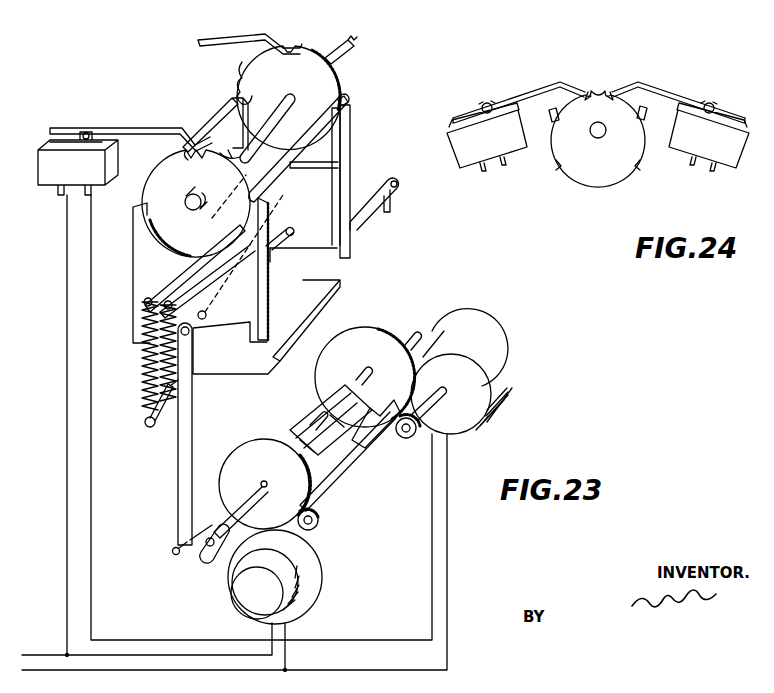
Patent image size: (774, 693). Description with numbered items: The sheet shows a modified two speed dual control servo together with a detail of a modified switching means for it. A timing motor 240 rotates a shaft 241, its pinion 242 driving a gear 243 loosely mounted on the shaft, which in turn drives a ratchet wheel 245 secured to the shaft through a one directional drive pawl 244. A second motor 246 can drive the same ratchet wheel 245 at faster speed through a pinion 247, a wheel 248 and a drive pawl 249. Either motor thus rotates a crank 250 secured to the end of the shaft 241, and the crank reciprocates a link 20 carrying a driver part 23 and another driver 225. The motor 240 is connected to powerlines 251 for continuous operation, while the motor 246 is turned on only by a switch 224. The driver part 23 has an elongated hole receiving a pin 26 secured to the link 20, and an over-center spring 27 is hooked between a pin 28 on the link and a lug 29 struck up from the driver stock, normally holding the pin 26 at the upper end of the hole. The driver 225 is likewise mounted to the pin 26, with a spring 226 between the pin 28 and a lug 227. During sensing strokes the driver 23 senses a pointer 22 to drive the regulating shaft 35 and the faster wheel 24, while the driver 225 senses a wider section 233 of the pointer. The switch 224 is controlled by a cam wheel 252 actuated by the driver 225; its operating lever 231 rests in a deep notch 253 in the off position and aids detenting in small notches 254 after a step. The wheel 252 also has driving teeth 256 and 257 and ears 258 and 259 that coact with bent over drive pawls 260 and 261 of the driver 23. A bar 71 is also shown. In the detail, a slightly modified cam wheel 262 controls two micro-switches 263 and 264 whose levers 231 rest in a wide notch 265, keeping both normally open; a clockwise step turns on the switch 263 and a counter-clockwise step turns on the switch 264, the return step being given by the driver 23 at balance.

In FIG. 23, the link 20 is at (177, 476).
In FIG. 23, the pointer 22 is at (358, 226).
In FIG. 23, the driver part 23 is at (350, 162).
In FIG. 23, the wheel 24 is at (336, 80).
In FIG. 23, the pin 26 is at (286, 228).
In FIG. 23, the over-center spring 27 is at (144, 412).
In FIG. 23, the pin 28 is at (162, 421).
In FIG. 23, the lug 29 is at (172, 280).
In FIG. 23, the regulating shaft 35 is at (347, 59).
In FIG. 23, the bar 71 is at (244, 36).
In FIG. 23, the switch 224 is at (48, 192).
In FIG. 23, the driver 225 is at (133, 288).
In FIG. 23, the spring 226 is at (164, 372).
In FIG. 23, the lug 227 is at (187, 302).
In FIG. 23, the actuator 231 is at (142, 128).
In FIG. 24, the actuator 231 is at (688, 90).
In FIG. 23, the wider section 233 is at (278, 368).
In FIG. 23, the timing motor 240 is at (320, 583).
In FIG. 23, the shaft 241 is at (213, 560).
In FIG. 23, the pinion 242 is at (318, 524).
In FIG. 23, the gear 243 is at (266, 442).
In FIG. 23, the one directional drive pawl 244 is at (328, 474).
In FIG. 23, the ratchet wheel 245 is at (304, 406).
In FIG. 23, the motor 246 is at (484, 402).
In FIG. 23, the pinion 247 is at (406, 439).
In FIG. 23, the wheel 248 is at (380, 330).
In FIG. 23, the drive pawl 249 is at (388, 406).
In FIG. 23, the crank 250 is at (174, 557).
In FIG. 23, the powerlines 251 is at (42, 666).
In FIG. 23, the cam wheel 252 is at (158, 168).
In FIG. 23, the deep notch 253 is at (195, 132).
In FIG. 23, the small notches 254 is at (224, 152).
In FIG. 24, the small notches 254 is at (634, 102).
In FIG. 23, the driving tooth 256 is at (162, 234).
In FIG. 24, the driving tooth 256 is at (554, 166).
In FIG. 23, the driving tooth 257 is at (240, 218).
In FIG. 24, the driving tooth 257 is at (638, 166).
In FIG. 23, the ear 258 is at (220, 108).
In FIG. 24, the ear 258 is at (548, 140).
In FIG. 23, the ear 259 is at (346, 103).
In FIG. 24, the ear 259 is at (648, 136).
In FIG. 23, the bent over drive pawl 260 is at (244, 70).
In FIG. 23, the bent over drive pawl 261 is at (342, 130).
In FIG. 24, the modified cam wheel 262 is at (602, 180).
In FIG. 24, the micro-switch 263 is at (496, 175).
In FIG. 24, the micro-switch 264 is at (706, 175).
In FIG. 24, the wide notch 265 is at (600, 88).